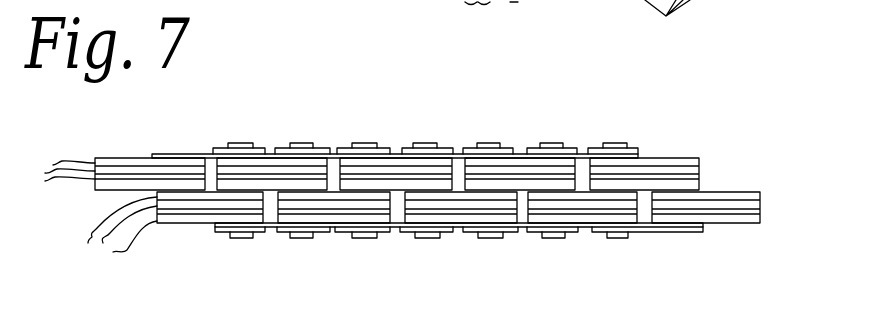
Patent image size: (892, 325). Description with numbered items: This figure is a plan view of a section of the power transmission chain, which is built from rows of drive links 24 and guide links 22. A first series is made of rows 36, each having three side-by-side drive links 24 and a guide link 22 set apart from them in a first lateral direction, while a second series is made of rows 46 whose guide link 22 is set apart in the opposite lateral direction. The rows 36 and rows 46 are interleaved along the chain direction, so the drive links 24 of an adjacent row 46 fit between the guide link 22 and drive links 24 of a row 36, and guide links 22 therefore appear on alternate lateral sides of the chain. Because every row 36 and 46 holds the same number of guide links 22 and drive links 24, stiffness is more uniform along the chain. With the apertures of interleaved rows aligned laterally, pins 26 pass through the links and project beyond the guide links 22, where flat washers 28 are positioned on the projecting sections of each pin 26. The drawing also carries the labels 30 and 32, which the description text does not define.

The guide link 22 is at (274, 150).
The drive link 24 is at (60, 165).
The pin 26 is at (788, 174).
The washer 28 is at (572, 237).
The circuit section 30 is at (202, 239).
The upper flexible circuit 32 is at (119, 144).
The row 36 is at (290, 252).
The row 46 is at (210, 139).